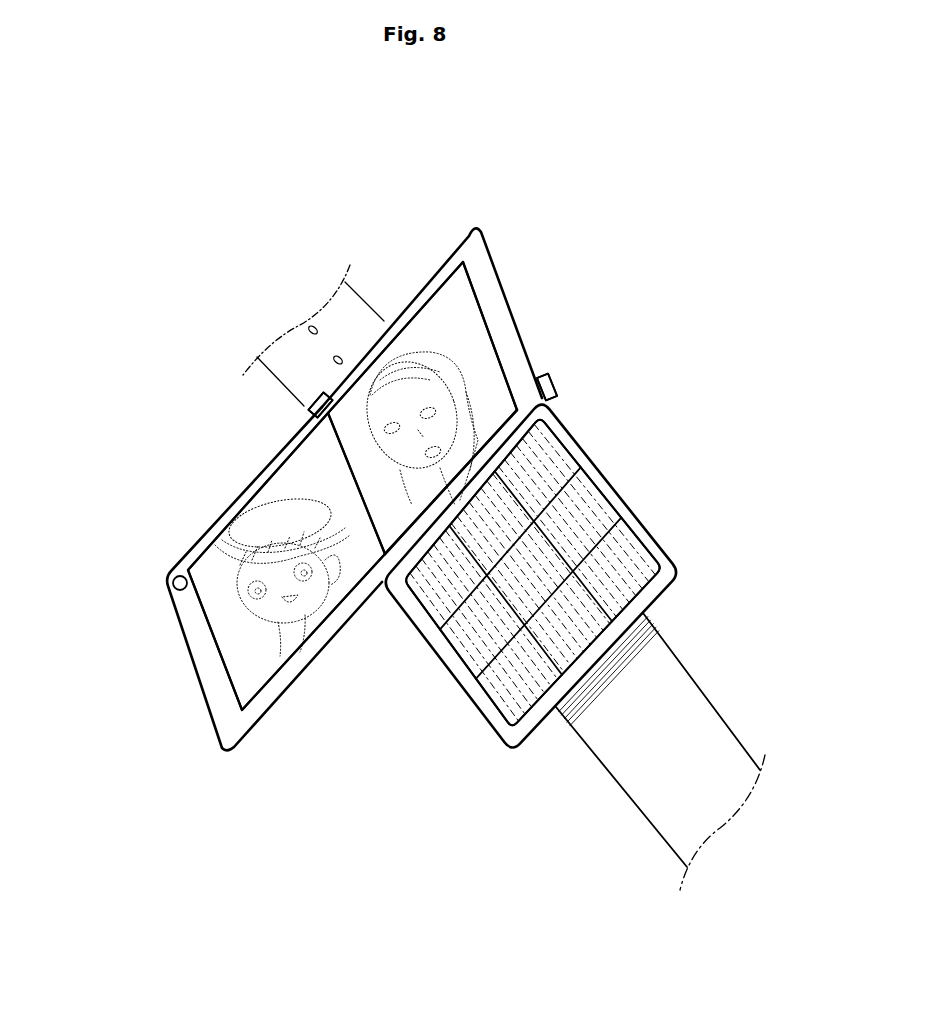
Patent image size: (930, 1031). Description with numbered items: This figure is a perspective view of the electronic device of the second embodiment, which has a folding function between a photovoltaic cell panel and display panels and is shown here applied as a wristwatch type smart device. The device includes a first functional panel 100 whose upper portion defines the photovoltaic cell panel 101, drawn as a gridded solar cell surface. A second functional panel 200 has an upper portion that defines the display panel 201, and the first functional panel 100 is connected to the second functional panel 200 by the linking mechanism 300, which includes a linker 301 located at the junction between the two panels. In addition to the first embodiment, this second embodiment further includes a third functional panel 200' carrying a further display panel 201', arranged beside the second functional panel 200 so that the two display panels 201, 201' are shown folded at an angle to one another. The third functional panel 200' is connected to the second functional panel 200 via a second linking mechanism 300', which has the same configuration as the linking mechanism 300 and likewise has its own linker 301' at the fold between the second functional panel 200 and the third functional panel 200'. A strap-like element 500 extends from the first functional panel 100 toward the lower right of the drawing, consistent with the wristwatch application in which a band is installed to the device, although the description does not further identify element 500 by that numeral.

The first functional panel 100 is at (657, 537).
The photovoltaic cell panel 101 is at (500, 705).
The second functional panel 200 is at (432, 350).
The display panel 201 is at (471, 372).
The third functional panel 200' is at (257, 578).
The further display panel 201' is at (216, 561).
The linking mechanism 300 is at (638, 365).
The linker 301 is at (598, 336).
The second linking mechanism 300' is at (219, 341).
The linker 301' is at (275, 321).
The handle 500 is at (647, 820).